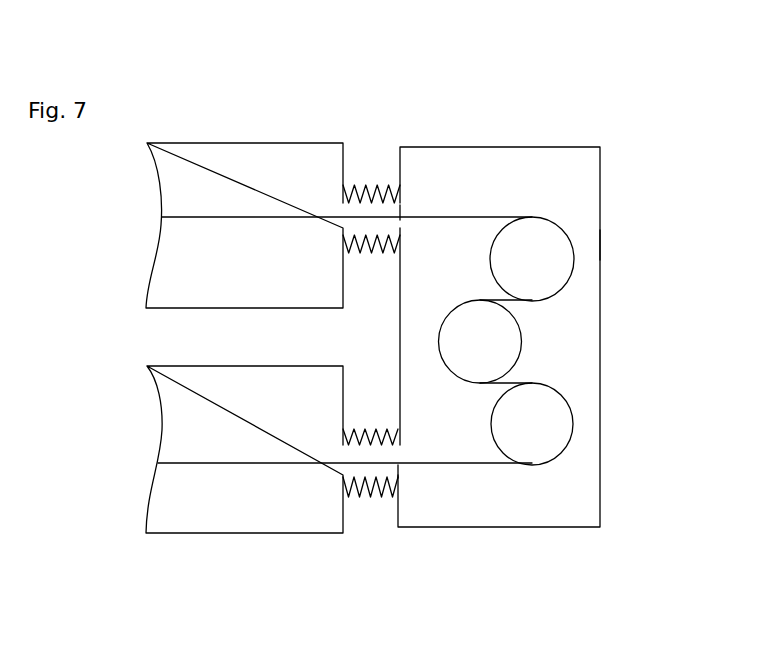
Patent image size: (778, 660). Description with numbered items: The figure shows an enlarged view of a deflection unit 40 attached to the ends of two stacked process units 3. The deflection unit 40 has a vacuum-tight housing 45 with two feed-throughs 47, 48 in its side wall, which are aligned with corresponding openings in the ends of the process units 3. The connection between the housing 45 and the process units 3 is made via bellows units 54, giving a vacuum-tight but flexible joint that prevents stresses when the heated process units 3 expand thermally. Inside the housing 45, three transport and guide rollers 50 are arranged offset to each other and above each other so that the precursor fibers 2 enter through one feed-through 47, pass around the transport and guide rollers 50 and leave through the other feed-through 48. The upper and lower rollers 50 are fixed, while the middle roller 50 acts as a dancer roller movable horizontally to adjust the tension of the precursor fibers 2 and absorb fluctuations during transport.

The precursor fibers 2 is at (243, 217).
The process units 3 is at (189, 135).
The deflection unit 40 is at (611, 176).
The vacuum-tight housing 45 is at (601, 238).
The feed-through 47 is at (397, 470).
The feed-through 48 is at (399, 213).
The transport and guide rollers 50 is at (529, 235).
The bellows units 54 is at (362, 185).